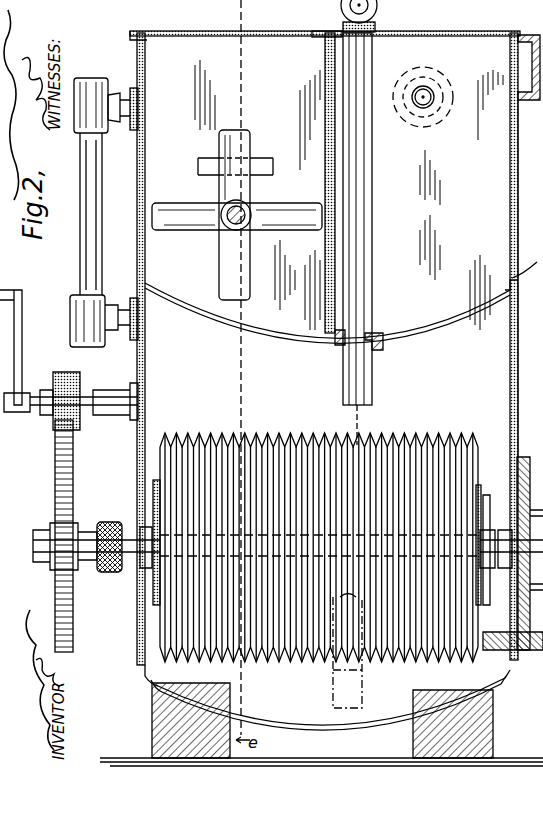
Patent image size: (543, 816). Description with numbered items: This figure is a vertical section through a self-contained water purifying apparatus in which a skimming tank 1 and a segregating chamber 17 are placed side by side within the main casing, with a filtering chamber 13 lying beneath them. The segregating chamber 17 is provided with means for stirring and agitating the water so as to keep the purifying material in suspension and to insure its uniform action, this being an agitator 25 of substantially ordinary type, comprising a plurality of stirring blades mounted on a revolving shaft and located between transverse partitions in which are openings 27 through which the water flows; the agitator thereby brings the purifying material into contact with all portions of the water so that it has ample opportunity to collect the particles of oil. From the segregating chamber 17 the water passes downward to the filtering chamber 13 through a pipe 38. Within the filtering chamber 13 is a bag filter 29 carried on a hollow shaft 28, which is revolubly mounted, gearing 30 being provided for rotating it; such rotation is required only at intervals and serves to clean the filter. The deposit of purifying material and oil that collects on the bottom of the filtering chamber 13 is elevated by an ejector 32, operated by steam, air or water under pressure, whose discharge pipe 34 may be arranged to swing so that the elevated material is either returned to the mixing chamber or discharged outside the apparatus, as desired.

The skimming tank 1 is at (490, 148).
The filtering chamber 13 is at (331, 505).
The segregating chamber 17 is at (311, 188).
The agitator 25 is at (176, 222).
The openings 27 is at (263, 167).
The hollow shaft 28 is at (33, 545).
The bag filter 29 is at (240, 432).
The gearing 30 is at (45, 536).
The ejector 32 is at (364, 676).
The discharge pipe 34 is at (372, 275).
The pipe 38 is at (87, 212).